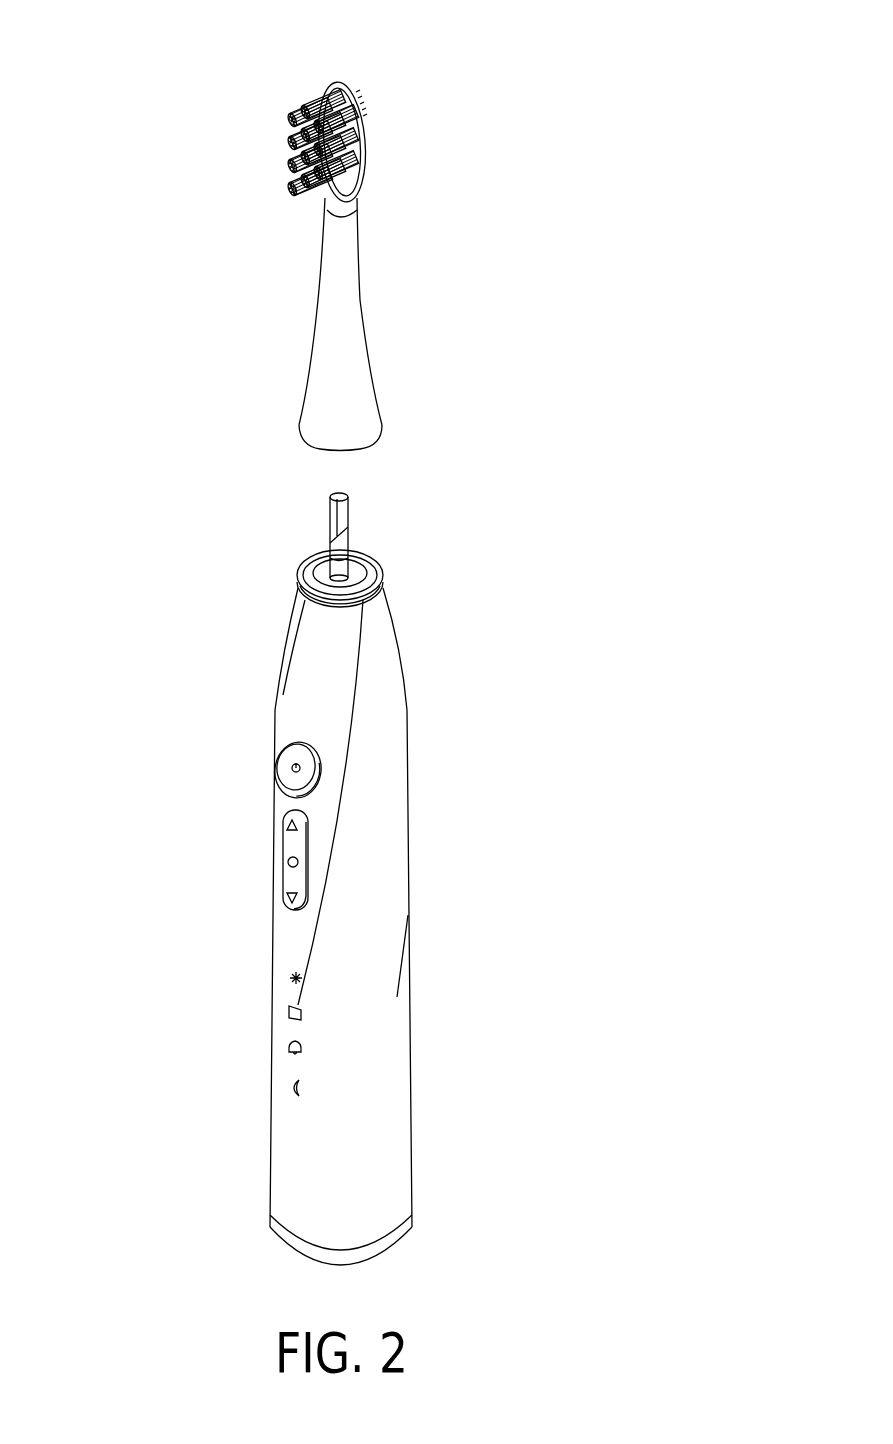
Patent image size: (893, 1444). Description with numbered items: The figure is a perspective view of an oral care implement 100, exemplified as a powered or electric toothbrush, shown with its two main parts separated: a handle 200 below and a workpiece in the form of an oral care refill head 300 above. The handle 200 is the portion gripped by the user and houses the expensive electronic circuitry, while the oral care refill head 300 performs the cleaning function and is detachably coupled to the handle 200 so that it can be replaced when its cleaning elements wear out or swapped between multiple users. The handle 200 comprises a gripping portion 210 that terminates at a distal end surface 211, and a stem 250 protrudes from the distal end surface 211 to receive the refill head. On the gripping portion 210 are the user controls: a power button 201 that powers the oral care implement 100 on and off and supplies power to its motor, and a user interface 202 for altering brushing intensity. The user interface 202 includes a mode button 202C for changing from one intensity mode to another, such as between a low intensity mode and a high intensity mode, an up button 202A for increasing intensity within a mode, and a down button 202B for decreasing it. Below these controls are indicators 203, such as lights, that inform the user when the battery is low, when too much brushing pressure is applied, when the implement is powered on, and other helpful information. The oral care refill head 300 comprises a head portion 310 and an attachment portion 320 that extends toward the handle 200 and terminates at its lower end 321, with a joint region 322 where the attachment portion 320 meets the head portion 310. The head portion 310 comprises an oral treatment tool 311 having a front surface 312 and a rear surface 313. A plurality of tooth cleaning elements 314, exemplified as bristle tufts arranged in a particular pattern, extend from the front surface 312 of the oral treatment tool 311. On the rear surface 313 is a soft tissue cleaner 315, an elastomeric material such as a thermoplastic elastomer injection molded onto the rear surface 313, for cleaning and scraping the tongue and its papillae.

The oral care implement 100 is at (100, 527).
The handle 200 is at (417, 768).
The power button 201 is at (286, 767).
The user interface 202 is at (324, 847).
The up button 202A is at (288, 827).
The down button 202B is at (287, 900).
The mode button 202C is at (287, 863).
The indicators 203 is at (283, 1037).
The gripping portion 210 is at (372, 1043).
The distal end surface 211 is at (367, 577).
The stem 250 is at (337, 517).
The oral care refill head 300 is at (425, 277).
The head portion 310 is at (380, 181).
The oral treatment tool 311 is at (358, 132).
The front surface 312 is at (317, 97).
The rear surface 313 is at (365, 170).
The tooth cleaning elements 314 is at (283, 169).
The soft tissue cleaner 315 is at (353, 88).
The attachment portion 320 is at (350, 402).
The neck base 321 is at (363, 447).
The neck joint 322 is at (338, 217).